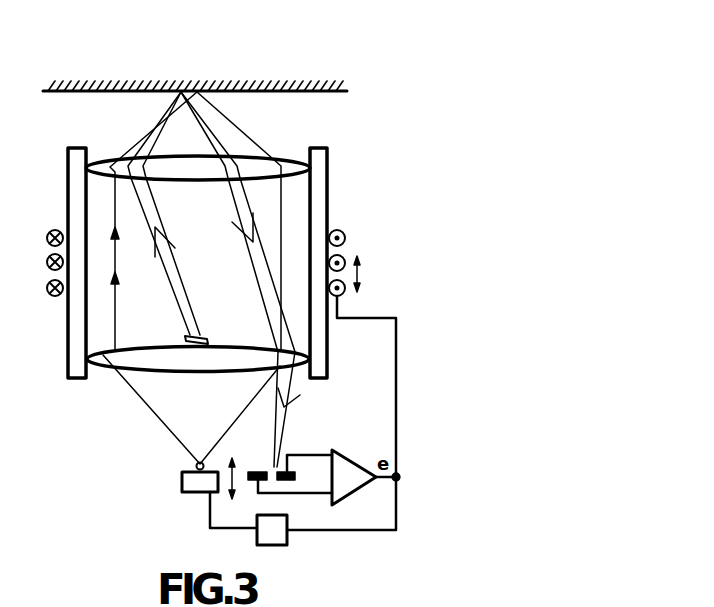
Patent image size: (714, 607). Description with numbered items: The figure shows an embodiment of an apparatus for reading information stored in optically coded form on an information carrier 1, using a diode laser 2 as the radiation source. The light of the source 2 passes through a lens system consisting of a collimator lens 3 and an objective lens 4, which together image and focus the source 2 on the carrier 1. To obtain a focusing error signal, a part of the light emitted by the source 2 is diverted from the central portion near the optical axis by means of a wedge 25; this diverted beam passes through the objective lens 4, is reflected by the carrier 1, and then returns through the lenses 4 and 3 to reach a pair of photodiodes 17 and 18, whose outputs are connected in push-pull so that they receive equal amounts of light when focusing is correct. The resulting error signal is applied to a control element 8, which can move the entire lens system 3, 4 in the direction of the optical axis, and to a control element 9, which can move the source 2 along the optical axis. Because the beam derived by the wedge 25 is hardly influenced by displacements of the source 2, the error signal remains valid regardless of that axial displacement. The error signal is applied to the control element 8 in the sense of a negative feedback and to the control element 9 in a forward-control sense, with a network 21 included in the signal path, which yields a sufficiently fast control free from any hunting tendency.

The information carrier 1 is at (332, 84).
The diode laser 2 is at (195, 465).
The collimator lens 3 is at (110, 362).
The objective lens 4 is at (108, 166).
The control element 8 is at (47, 260).
The control element 9 is at (190, 483).
The photodiode 17 is at (258, 472).
The photodiode 18 is at (295, 476).
The network 21 is at (287, 537).
The wedge 25 is at (204, 338).